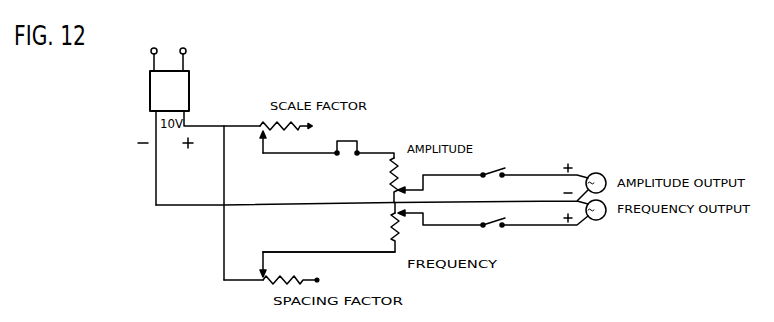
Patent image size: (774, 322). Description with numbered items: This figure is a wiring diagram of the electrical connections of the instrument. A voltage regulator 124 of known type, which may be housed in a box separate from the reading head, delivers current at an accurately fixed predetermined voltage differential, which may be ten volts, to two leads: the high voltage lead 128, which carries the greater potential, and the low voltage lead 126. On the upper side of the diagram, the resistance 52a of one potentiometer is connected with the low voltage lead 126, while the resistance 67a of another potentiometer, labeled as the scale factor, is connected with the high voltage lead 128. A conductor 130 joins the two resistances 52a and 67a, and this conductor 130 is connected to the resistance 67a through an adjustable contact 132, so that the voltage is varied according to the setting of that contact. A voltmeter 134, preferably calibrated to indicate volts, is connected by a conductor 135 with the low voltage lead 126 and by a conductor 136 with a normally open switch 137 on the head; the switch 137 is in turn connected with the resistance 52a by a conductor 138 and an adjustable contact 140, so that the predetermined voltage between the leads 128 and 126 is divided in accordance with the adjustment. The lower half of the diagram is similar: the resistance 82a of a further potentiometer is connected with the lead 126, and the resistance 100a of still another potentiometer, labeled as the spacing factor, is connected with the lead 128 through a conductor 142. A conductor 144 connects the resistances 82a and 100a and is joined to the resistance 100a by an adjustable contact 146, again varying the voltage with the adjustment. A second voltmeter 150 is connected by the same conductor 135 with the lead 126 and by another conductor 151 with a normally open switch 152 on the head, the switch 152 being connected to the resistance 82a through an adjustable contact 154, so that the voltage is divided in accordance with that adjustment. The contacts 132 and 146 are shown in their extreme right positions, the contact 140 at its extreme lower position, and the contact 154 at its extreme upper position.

The voltage regulator 124 is at (171, 100).
The high voltage lead 128 is at (203, 107).
The low voltage lead 126 is at (156, 180).
The resistance of potentiometer 67 67a is at (268, 123).
The adjustable contact 132 is at (261, 143).
The conductor 130 is at (324, 155).
The resistance of potentiometer 52 52a is at (392, 189).
The resistance of potentiometer 82 82a is at (392, 235).
The adjustable contact 140 is at (424, 194).
The conductor 138 is at (437, 178).
The adjustable contact 154 is at (424, 214).
The normally open switch 137 is at (487, 173).
The conductor 136 is at (526, 175).
The conductor 135 is at (508, 201).
The voltmeter 134 is at (603, 175).
The voltmeter 150 is at (603, 220).
The normally open switch 152 is at (486, 228).
The conductor 151 is at (540, 227).
The conductor 142 is at (224, 256).
The adjustable contact 146 is at (260, 270).
The conductor 144 is at (291, 252).
The resistance of potentiometer 100 100a is at (291, 278).